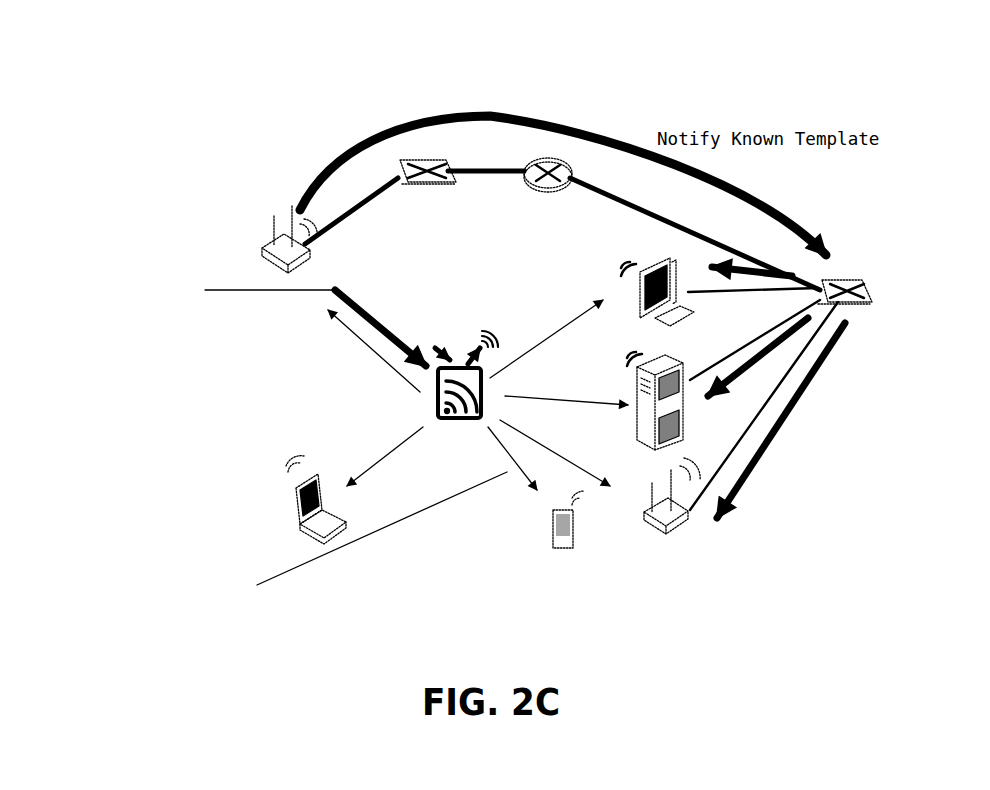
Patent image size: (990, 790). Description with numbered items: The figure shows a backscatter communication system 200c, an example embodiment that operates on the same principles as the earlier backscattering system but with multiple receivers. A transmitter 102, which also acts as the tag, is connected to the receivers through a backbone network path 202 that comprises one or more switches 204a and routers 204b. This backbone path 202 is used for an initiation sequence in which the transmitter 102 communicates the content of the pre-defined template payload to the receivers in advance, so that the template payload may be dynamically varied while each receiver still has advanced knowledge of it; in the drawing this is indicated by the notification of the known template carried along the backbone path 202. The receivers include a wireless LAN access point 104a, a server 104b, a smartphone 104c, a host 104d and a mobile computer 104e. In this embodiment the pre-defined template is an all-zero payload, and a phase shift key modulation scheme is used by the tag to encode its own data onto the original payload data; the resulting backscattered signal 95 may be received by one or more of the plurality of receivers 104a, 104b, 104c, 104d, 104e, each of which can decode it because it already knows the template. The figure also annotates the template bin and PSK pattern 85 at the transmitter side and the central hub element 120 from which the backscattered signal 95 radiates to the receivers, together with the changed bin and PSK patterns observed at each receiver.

The backscatter communication system 200c is at (120, 58).
The backbone network path 202 is at (508, 102).
The switch 204a is at (392, 162).
The router 204b is at (556, 150).
The transmitter 102 is at (250, 248).
The bin/PSK template data 85 is at (358, 280).
The hub device 120 is at (420, 404).
The backscattered signal 95 is at (332, 330).
The wireless LAN access point 104a is at (678, 540).
The server 104b is at (688, 432).
The smartphone 104c is at (572, 572).
The host 104d is at (628, 258).
The mobile computer 104e is at (278, 484).